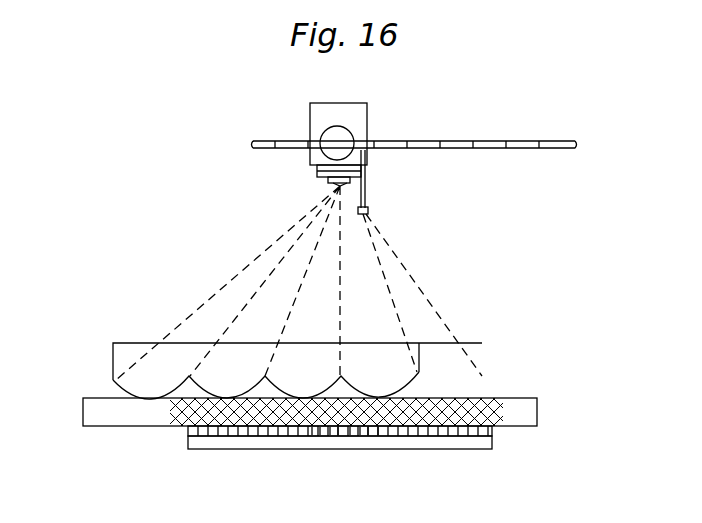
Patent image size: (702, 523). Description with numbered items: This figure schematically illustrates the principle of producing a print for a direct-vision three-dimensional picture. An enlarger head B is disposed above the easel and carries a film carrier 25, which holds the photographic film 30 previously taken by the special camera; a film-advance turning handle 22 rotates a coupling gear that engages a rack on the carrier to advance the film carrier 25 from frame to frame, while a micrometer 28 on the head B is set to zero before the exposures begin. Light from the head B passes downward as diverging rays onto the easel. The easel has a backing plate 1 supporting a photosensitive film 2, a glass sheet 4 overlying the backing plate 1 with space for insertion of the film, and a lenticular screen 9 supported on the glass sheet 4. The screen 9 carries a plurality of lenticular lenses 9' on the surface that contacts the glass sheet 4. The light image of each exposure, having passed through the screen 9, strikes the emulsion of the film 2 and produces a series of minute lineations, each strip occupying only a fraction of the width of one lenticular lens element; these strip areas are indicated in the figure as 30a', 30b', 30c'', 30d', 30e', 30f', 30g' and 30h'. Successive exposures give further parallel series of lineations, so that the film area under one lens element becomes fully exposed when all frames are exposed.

The enlarger head B is at (368, 113).
The micrometer 28 is at (328, 129).
The film carrier 25 is at (498, 141).
The film-advance turning handle 22 is at (369, 212).
The photographic film 30 is at (331, 188).
The lenticular screen 9 is at (262, 356).
The lenticular lenses 9' is at (242, 385).
The glass sheet 4 is at (83, 418).
The photosensitive film 2 is at (493, 431).
The backing plate 1 is at (493, 445).
The cell 30a' is at (447, 463).
The cell 30b' is at (425, 458).
The cell 30c'' is at (402, 456).
The cell 30d' is at (376, 463).
The cell 30e' is at (347, 460).
The cell 30f' is at (312, 464).
The cell 30g' is at (289, 460).
The cell 30h' is at (282, 449).